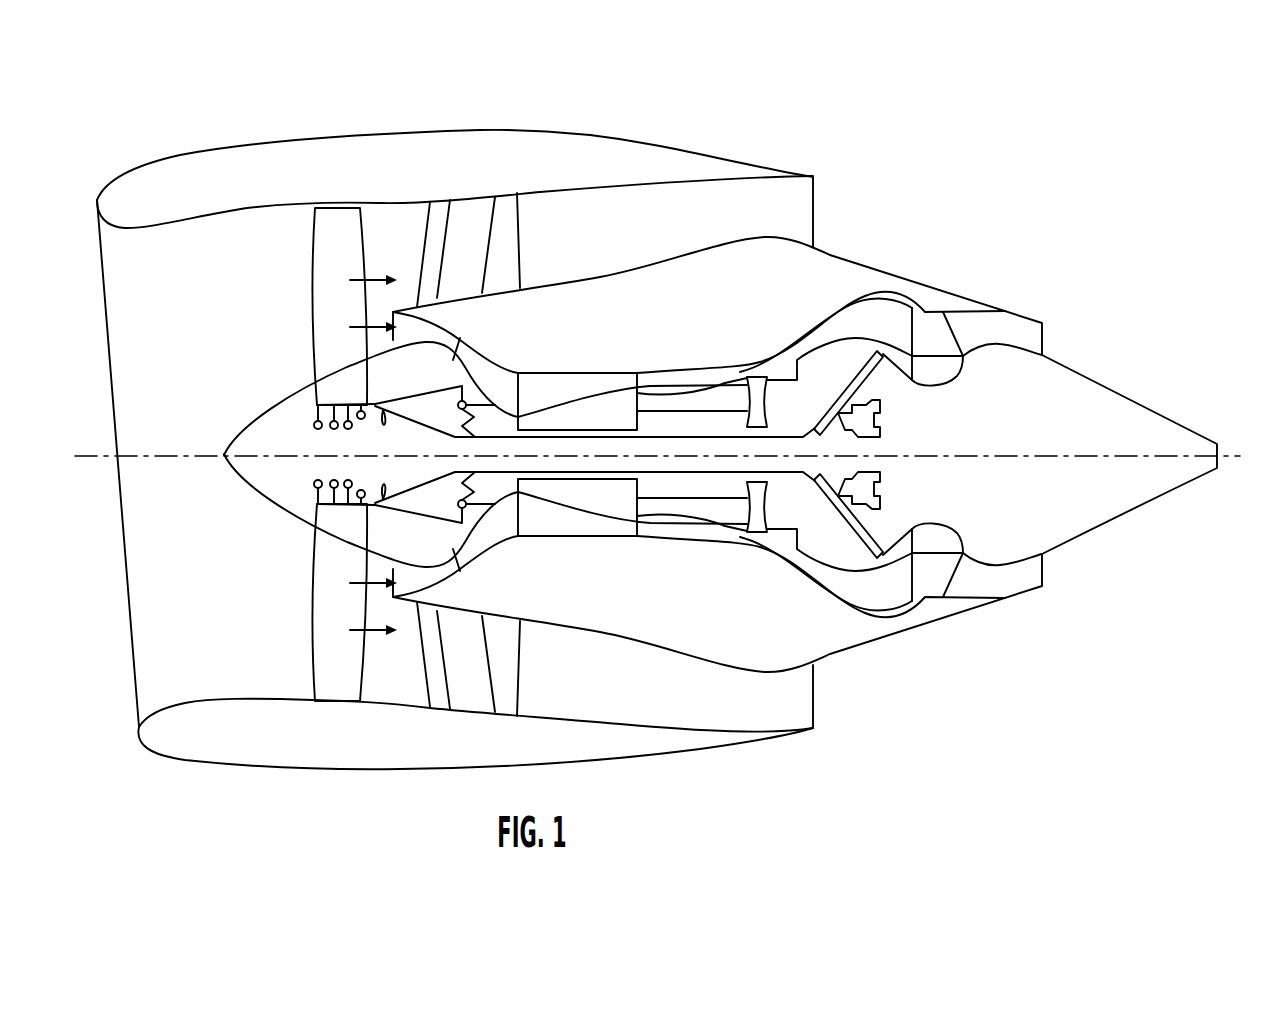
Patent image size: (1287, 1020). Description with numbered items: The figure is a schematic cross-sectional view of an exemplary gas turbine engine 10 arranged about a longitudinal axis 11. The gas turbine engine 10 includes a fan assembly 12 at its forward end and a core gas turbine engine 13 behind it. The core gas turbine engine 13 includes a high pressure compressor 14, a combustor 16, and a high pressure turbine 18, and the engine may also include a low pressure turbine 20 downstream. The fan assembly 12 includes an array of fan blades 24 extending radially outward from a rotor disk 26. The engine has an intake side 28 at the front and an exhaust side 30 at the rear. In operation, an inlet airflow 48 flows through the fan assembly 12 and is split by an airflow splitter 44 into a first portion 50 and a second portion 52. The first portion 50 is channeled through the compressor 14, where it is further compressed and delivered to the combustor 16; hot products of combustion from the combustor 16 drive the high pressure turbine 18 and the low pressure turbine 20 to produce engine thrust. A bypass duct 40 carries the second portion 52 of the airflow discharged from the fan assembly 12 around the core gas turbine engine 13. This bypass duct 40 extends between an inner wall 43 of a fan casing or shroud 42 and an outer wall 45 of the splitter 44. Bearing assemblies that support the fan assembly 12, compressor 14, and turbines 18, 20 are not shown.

The gas turbine engine 10 is at (967, 104).
The longitudinal axis 11 is at (153, 453).
The fan assembly 12 is at (322, 628).
The core gas turbine engine 13 is at (935, 288).
The high pressure compressor 14 is at (532, 384).
The combustor 16 is at (713, 384).
The high pressure turbine 18 is at (760, 535).
The low pressure turbine 20 is at (857, 320).
The fan blades 24 is at (327, 352).
The rotor disk 26 is at (333, 527).
The intake side 28 is at (123, 694).
The exhaust side 30 is at (868, 176).
The bypass duct 40 is at (585, 253).
The fan casing or shroud 42 is at (587, 128).
The inner wall 43 is at (110, 228).
The airflow splitter 44 is at (543, 624).
The outer wall 45 is at (864, 261).
The inlet airflow 48 is at (152, 617).
The first portion 50 is at (357, 320).
The second portion 52 is at (357, 275).